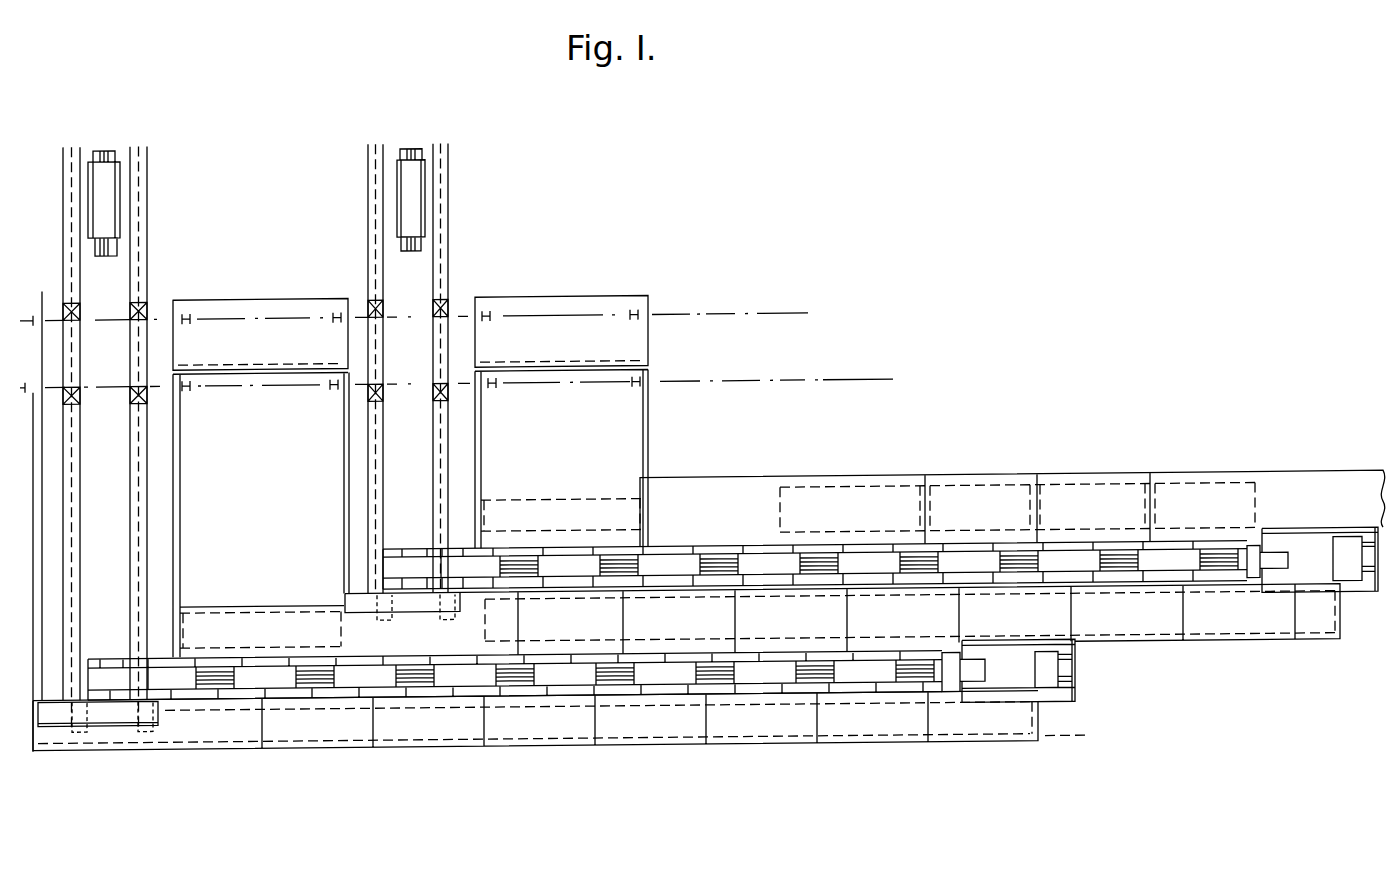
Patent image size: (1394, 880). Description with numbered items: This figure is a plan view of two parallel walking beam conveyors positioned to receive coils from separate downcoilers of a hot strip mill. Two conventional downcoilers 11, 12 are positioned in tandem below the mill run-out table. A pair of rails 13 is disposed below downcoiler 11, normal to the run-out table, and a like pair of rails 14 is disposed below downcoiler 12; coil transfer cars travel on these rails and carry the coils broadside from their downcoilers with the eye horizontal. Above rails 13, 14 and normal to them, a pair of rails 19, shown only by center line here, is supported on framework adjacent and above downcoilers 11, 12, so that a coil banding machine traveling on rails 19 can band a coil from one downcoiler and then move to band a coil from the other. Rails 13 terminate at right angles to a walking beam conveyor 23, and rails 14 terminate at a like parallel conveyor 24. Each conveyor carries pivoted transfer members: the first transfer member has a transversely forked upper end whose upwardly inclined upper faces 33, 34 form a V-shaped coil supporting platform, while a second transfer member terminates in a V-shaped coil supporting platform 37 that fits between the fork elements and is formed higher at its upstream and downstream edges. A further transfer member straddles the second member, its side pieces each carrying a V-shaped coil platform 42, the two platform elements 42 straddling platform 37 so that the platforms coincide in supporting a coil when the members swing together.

The downcoiler 11 is at (103, 173).
The downcoiler 12 is at (407, 173).
The pair of rails 13 is at (147, 266).
The pair of rails 14 is at (449, 284).
The pair of rails 19 is at (223, 320).
The walking beam conveyor 23 is at (163, 680).
The parallel conveyor 24 is at (668, 574).
The upper face of fork 33 is at (88, 660).
The upper face of fork 34 is at (128, 698).
The coil supporting platform 37 is at (192, 684).
The V-shaped coil platform 42 is at (222, 665).